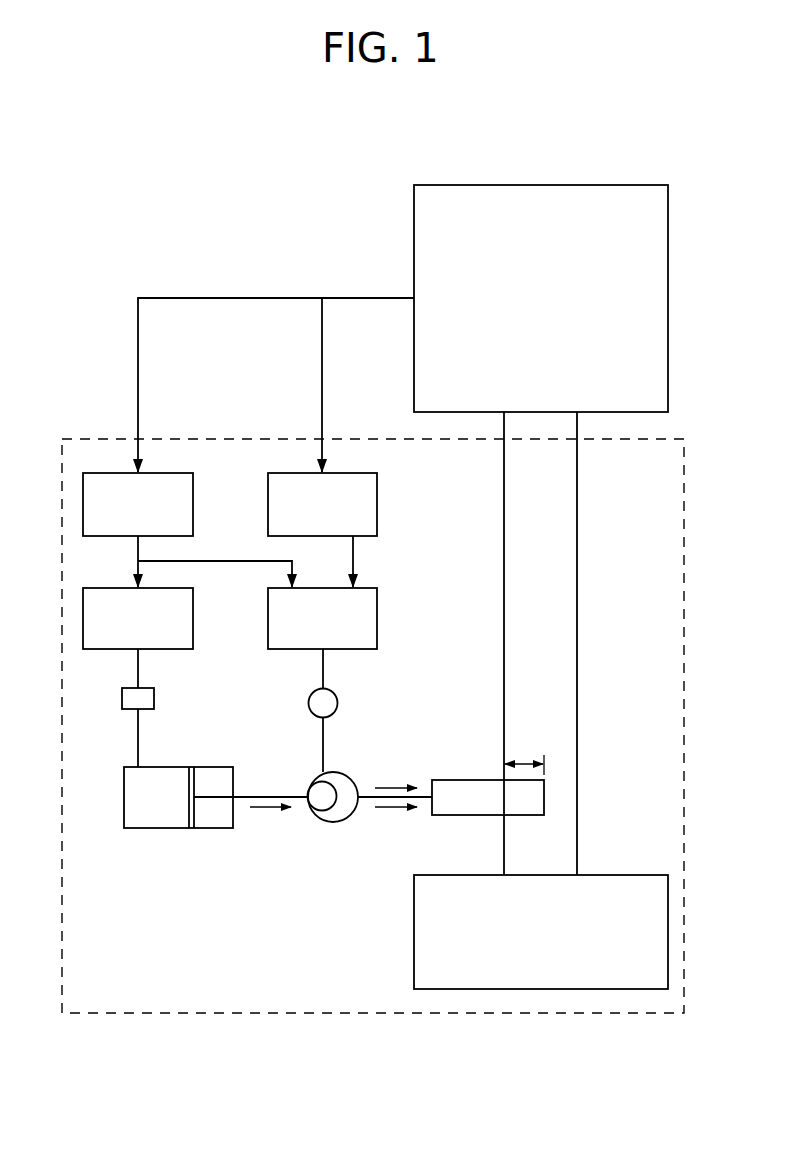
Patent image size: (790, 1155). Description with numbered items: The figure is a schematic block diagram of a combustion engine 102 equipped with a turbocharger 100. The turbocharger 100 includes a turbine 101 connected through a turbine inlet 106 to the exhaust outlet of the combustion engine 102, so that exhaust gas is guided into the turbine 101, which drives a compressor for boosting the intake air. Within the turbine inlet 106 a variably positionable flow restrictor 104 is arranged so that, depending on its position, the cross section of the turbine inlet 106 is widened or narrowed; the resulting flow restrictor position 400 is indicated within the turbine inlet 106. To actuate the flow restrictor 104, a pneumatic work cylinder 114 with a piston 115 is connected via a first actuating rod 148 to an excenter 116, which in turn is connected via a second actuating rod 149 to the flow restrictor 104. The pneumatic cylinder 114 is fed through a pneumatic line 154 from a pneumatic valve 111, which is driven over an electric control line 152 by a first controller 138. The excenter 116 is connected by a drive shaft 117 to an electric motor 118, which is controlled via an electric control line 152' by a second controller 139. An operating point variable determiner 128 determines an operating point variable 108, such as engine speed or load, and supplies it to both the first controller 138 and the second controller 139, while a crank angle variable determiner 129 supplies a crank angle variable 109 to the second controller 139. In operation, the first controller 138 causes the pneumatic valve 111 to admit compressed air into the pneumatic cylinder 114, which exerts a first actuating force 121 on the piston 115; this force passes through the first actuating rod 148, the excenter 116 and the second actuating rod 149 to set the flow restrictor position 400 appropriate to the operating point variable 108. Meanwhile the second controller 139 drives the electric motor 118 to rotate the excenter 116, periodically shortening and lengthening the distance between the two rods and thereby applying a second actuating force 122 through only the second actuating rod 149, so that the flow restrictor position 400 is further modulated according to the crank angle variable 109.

The turbocharger 100 is at (100, 437).
The turbine 101 is at (414, 931).
The combustion engine 102 is at (414, 235).
The flow restrictor 104 is at (466, 815).
The turbine inlet 106 is at (577, 843).
The operating point variable 108 is at (216, 563).
The crank angle variable 109 is at (356, 553).
The pneumatic valve 111 is at (154, 697).
The pneumatic work cylinder 114 is at (157, 828).
The piston 115 is at (196, 828).
The excenter 116 is at (333, 822).
The drive shaft 117 is at (322, 747).
The electric motor 118 is at (338, 703).
The first actuating force 121 is at (264, 810).
The second actuating force 122 is at (387, 783).
The operating point variable determiner 128 is at (195, 503).
The crank angle variable determiner 129 is at (379, 503).
The first controller 138 is at (195, 628).
The second controller 139 is at (379, 618).
The first actuating rod 148 is at (262, 795).
The second actuating rod 149 is at (420, 792).
The electric control line 152 is at (108, 668).
The electric control line 152' is at (355, 668).
The pneumatic line 154 is at (138, 735).
The flow restrictor position 400 is at (523, 762).